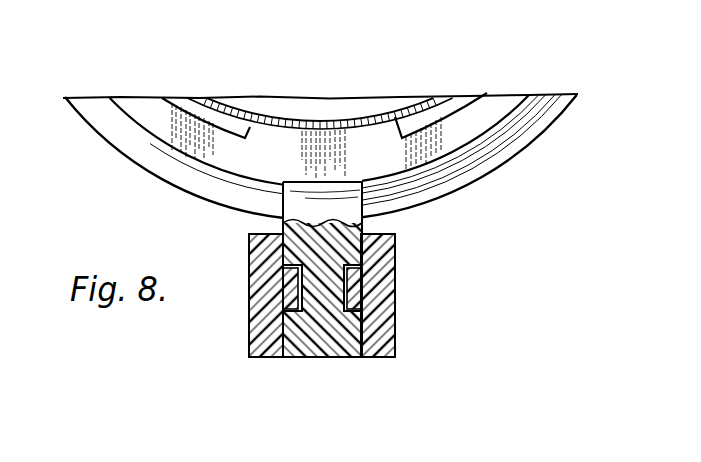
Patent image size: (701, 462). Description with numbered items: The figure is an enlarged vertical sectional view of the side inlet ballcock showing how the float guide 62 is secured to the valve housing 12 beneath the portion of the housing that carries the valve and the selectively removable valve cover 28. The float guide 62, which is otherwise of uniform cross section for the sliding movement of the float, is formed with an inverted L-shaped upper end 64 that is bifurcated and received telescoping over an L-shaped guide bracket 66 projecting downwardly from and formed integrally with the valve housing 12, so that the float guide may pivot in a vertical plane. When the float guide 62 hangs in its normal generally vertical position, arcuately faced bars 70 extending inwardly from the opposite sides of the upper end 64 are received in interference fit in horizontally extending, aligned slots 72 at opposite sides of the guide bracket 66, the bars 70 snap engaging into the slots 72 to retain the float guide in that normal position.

The valve housing 12 is at (136, 170).
The valve cover 28 is at (260, 105).
The float guide 62 is at (245, 328).
The inverted L-shaped upper end 64 is at (395, 338).
The guide bracket 66 is at (364, 218).
The bars 70 is at (290, 278).
The slots 72 is at (293, 285).